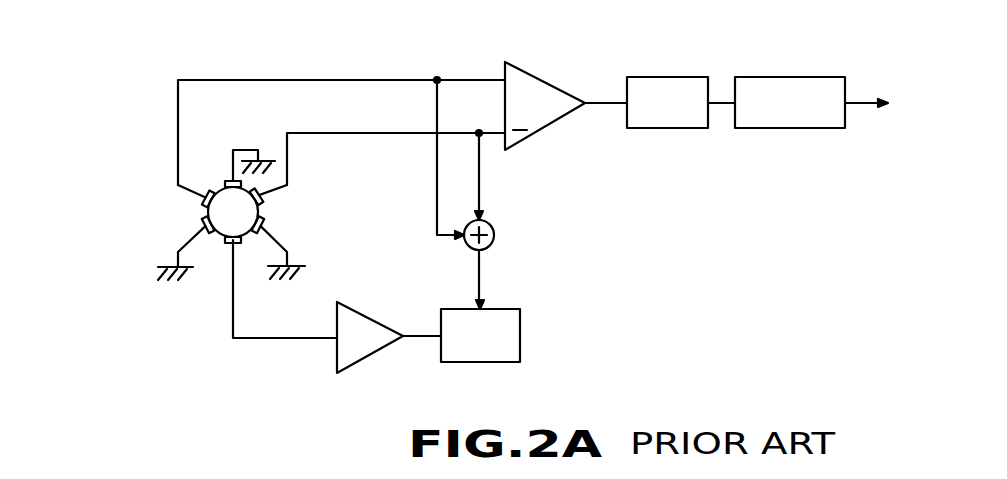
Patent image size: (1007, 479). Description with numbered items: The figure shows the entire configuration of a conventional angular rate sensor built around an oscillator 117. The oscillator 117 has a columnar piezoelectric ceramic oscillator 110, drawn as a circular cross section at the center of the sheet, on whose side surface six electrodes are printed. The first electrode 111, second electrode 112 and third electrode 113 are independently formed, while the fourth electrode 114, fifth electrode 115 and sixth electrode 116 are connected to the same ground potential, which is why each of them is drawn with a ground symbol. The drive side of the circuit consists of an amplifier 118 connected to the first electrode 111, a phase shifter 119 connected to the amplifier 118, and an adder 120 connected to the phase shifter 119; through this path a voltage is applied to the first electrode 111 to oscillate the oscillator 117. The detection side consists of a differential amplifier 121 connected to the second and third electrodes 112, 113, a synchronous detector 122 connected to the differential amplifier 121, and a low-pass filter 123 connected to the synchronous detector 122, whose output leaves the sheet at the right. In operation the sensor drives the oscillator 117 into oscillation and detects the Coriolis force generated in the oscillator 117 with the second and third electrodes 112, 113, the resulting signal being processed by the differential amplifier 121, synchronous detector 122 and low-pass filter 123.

The piezoelectric ceramic oscillator 110 is at (224, 238).
The first electrode 111 is at (245, 241).
The second electrode 112 is at (270, 200).
The third electrode 113 is at (198, 199).
The fourth electrode 114 is at (229, 179).
The fifth electrode 115 is at (198, 227).
The sixth electrode 116 is at (270, 228).
The oscillator 117 is at (219, 240).
The amplifier 118 is at (375, 353).
The phase shifter 119 is at (481, 363).
The adder 120 is at (494, 228).
The differential amplifier 121 is at (544, 81).
The synchronous detector 122 is at (666, 77).
The low-pass filter 123 is at (790, 77).